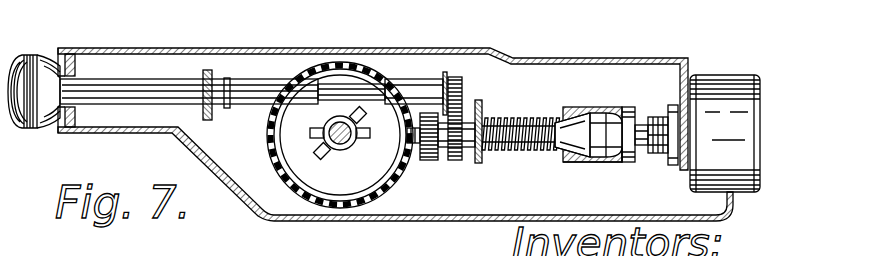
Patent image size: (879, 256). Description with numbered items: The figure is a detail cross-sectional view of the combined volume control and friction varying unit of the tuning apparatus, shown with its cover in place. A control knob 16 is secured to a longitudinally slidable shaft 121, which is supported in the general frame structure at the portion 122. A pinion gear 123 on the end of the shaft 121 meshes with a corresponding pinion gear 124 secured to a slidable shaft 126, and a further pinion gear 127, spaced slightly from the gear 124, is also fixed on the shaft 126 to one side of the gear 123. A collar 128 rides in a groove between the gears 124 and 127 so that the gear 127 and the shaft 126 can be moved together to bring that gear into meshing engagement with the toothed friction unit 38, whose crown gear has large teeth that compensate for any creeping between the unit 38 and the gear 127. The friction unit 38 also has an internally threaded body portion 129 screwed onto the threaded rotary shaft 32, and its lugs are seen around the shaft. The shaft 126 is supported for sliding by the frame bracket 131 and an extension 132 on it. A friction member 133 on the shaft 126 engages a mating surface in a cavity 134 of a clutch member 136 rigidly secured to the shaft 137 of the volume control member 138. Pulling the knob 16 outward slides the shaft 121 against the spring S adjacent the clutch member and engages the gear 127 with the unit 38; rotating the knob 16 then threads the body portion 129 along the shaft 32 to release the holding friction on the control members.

The control knob 16 is at (40, 56).
The rotary shaft 32 is at (340, 151).
The toothed friction unit 38 is at (363, 80).
The longitudinally slidable shaft 121 is at (260, 88).
The frame portion 122 is at (208, 70).
The pinion gear 123 is at (460, 78).
The pinion gear 124 is at (455, 150).
The slidable shaft 126 is at (468, 122).
The pinion gear 127 is at (432, 161).
The collar 128 is at (445, 72).
The internally threaded body portion 129 is at (322, 133).
The frame bracket 131 is at (485, 108).
The extension 132 is at (605, 113).
The friction member 133 is at (571, 110).
The cavity 134 is at (590, 163).
The clutch member 136 is at (632, 165).
The shaft 137 is at (643, 128).
The volume control member 138 is at (738, 82).
The spring S is at (532, 121).